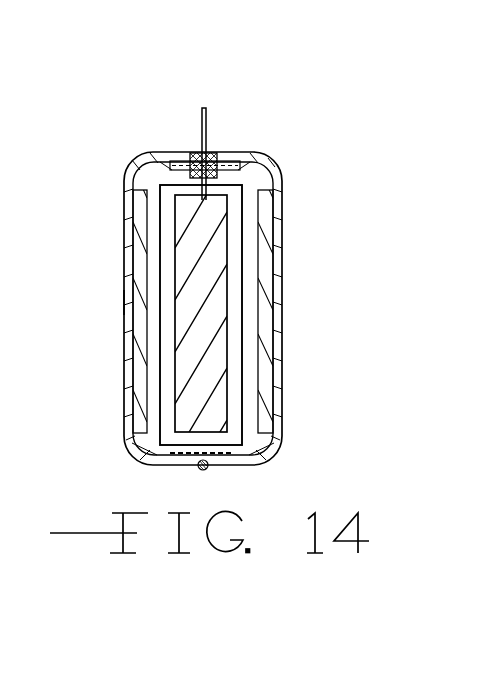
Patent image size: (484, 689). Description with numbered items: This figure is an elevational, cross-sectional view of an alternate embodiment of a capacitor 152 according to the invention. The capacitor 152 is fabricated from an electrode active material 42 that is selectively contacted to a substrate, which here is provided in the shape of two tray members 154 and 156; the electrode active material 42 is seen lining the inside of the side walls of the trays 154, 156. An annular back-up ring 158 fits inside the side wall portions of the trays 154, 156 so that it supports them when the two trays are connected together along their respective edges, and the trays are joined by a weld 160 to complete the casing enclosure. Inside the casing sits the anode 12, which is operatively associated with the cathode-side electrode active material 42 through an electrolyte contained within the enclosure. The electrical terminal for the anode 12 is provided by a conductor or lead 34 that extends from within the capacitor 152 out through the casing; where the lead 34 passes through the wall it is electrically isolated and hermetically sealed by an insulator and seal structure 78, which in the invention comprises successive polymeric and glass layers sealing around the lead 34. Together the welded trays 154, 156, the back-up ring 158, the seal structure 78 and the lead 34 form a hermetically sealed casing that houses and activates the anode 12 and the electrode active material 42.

The anode 12 is at (228, 308).
The lead 34 is at (210, 144).
The electrode active material 42 is at (266, 348).
The insulator and seal structure 78 is at (215, 147).
The capacitor 152 is at (347, 201).
The tray member 154 is at (283, 260).
The tray member 156 is at (124, 300).
The annular back-up ring 158 is at (252, 170).
The weld 160 is at (203, 470).